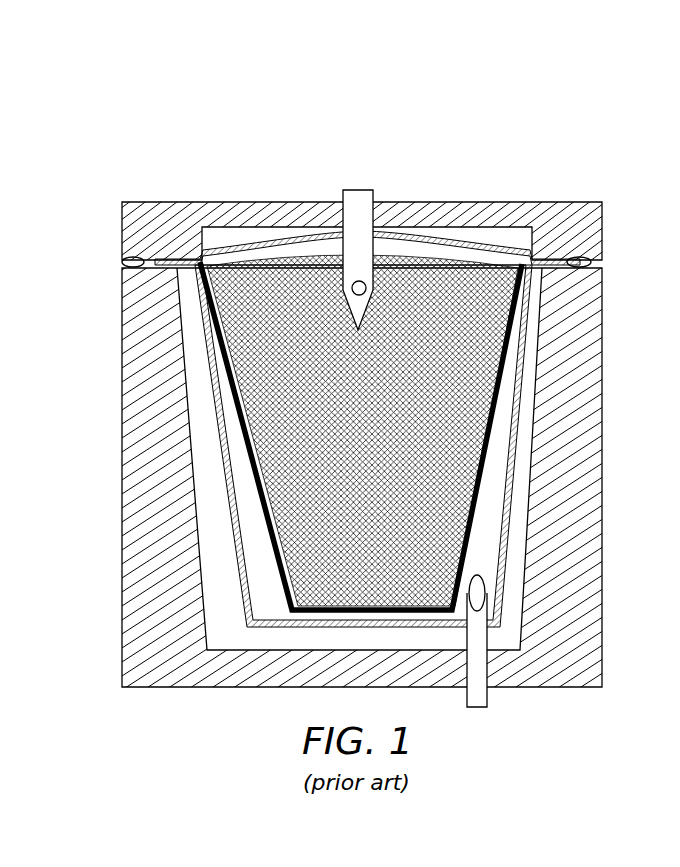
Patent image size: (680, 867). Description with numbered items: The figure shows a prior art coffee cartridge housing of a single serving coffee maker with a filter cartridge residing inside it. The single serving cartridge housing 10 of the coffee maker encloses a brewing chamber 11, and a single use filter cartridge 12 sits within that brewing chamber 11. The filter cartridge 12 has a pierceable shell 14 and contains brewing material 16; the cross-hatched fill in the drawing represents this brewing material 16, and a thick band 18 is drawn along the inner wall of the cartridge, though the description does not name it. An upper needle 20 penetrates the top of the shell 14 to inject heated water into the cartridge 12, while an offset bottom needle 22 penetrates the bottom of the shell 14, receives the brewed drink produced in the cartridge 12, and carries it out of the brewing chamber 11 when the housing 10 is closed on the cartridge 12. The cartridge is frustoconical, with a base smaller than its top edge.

The single serving cartridge housing 10 is at (567, 212).
The brewing chamber 11 is at (527, 408).
The filter cartridge 12 is at (442, 287).
The pierceable shell 14 is at (412, 236).
The brewing material 16 is at (420, 362).
The heating band 18 is at (483, 455).
The upper needle 20 is at (358, 200).
The offset bottom needle 22 is at (480, 708).